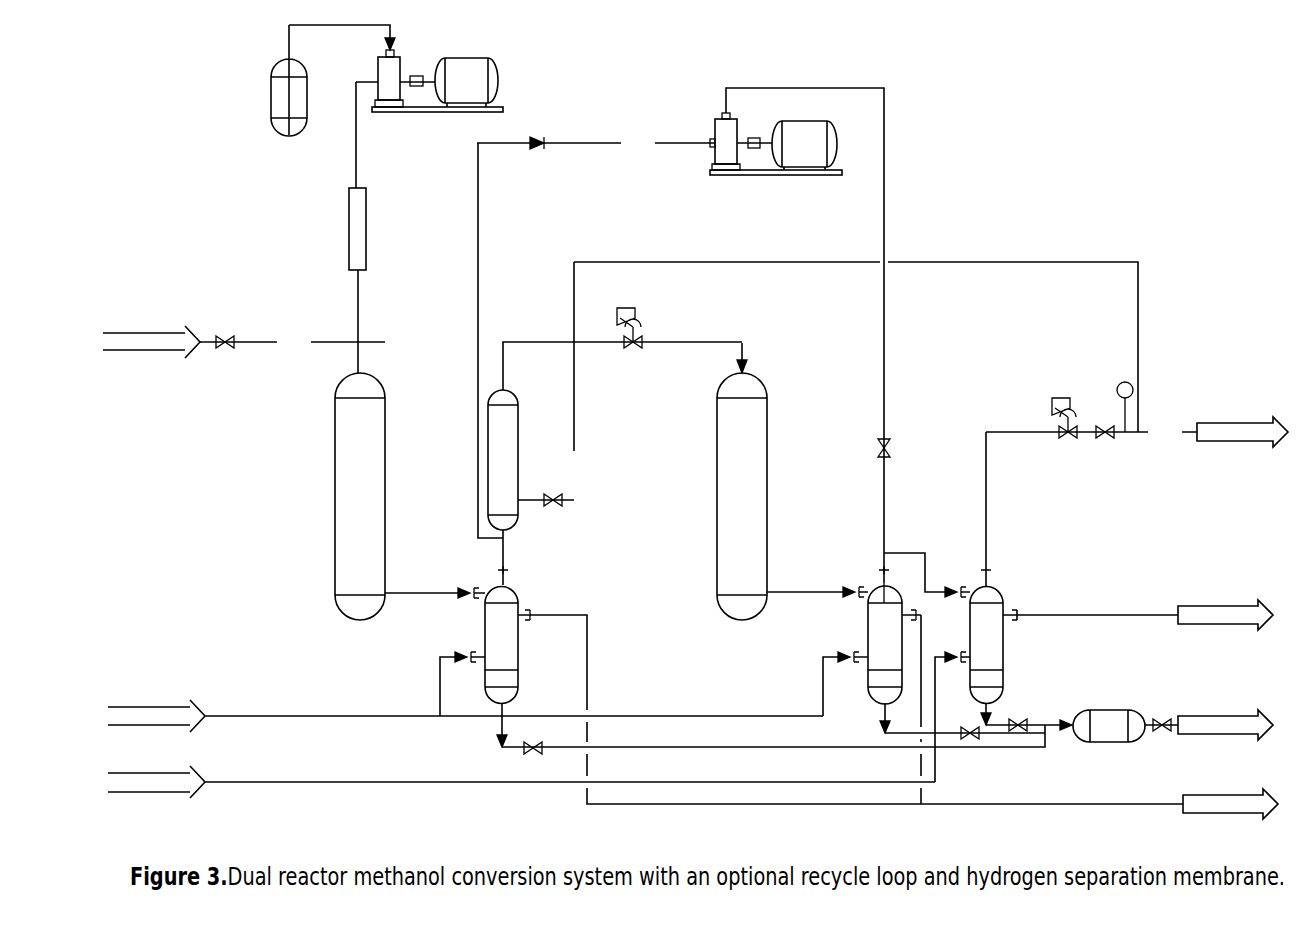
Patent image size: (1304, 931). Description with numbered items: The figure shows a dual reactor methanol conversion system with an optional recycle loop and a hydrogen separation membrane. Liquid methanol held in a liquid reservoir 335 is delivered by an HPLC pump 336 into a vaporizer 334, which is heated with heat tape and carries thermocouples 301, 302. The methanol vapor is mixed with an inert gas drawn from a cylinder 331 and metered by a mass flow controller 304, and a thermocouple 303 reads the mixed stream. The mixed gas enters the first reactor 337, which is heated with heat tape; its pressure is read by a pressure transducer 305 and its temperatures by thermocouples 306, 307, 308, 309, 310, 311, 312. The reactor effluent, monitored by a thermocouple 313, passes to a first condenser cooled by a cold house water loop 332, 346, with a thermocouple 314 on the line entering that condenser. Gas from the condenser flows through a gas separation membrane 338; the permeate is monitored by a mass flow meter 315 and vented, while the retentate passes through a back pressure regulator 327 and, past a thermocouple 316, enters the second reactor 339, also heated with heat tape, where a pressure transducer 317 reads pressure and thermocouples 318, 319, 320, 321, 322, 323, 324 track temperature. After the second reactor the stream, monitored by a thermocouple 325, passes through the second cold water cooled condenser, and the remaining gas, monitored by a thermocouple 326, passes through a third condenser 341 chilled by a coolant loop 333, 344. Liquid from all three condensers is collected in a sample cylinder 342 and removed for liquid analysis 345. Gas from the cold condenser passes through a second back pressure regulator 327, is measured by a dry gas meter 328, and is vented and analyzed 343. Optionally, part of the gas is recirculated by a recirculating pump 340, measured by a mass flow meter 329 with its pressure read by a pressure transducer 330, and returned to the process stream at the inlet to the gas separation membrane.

The thermocouple 301 is at (358, 227).
The thermocouple 302 is at (349, 265).
The thermocouple 303 is at (402, 342).
The mass flow controller 304 is at (331, 342).
The pressure transducer 305 is at (385, 412).
The thermocouple 306 is at (360, 423).
The thermocouple 307 is at (360, 457).
The thermocouple 308 is at (360, 490).
The thermocouple 309 is at (360, 525).
The thermocouple 310 is at (360, 558).
The thermocouple 311 is at (385, 465).
The thermocouple 312 is at (385, 527).
The thermocouple 313 is at (453, 593).
The thermocouple 314 is at (503, 555).
The mass flow meter 315 is at (574, 500).
The thermocouple 316 is at (742, 343).
The pressure transducer 317 is at (767, 412).
The thermocouple 318 is at (742, 423).
The thermocouple 319 is at (742, 457).
The thermocouple 320 is at (742, 490).
The thermocouple 321 is at (742, 524).
The thermocouple 322 is at (742, 558).
The thermocouple 323 is at (767, 465).
The thermocouple 324 is at (767, 527).
The thermocouple 325 is at (837, 592).
The thermocouple 326 is at (925, 553).
The back pressure regulator 327 is at (640, 348).
The dry gas meter 328 is at (1091, 415).
The mass flow meter 329 is at (638, 143).
The pressure transducer 330 is at (573, 143).
The inert gas cylinder 331 is at (134, 326).
The cold house water loop inlet 332 is at (134, 704).
The coolant loop inlet 333 is at (134, 771).
The vaporizer 334 is at (245, 232).
The liquid reservoir 335 is at (266, 156).
The HPLC pump 336 is at (423, 138).
The first reactor 337 is at (298, 660).
The gas separation membrane 338 is at (521, 526).
The second reactor 339 is at (689, 655).
The recirculating pump 340 is at (761, 198).
The third condenser 341 is at (1039, 657).
The sample cylinder 342 is at (1074, 766).
The gas vent and analysis outlet 343 is at (1213, 416).
The coolant loop return 344 is at (1203, 601).
The liquid analysis outlet 345 is at (1203, 712).
The cold house water loop return 346 is at (1209, 792).